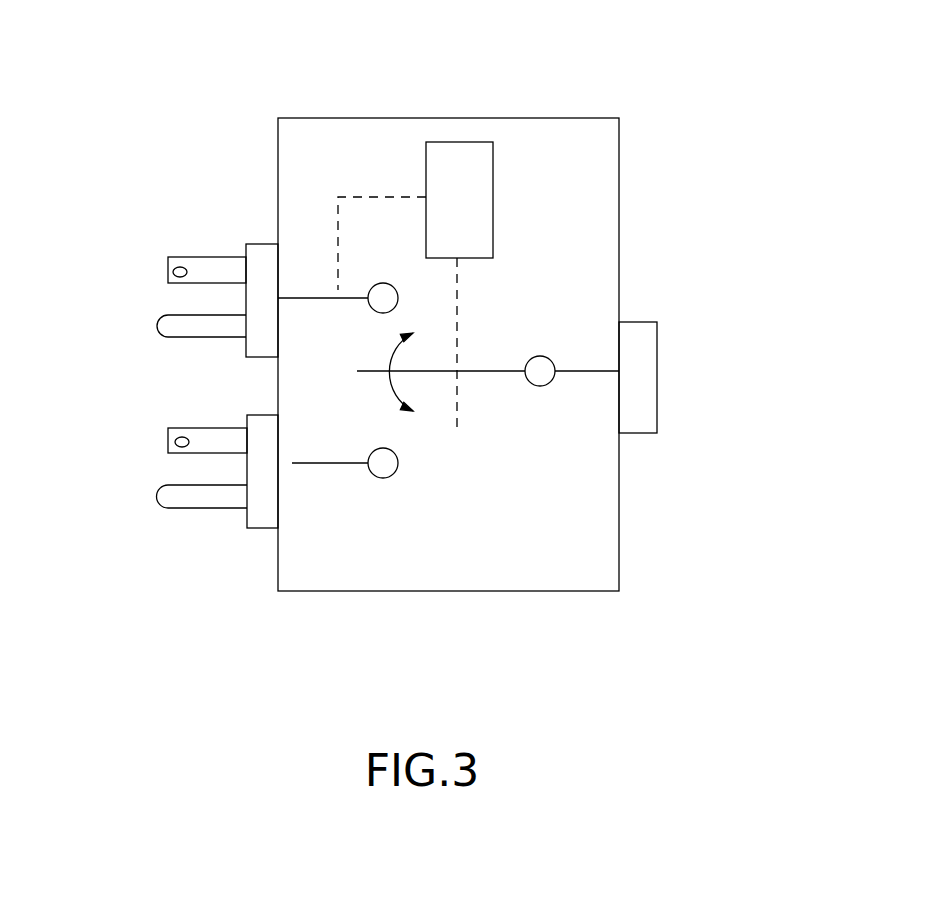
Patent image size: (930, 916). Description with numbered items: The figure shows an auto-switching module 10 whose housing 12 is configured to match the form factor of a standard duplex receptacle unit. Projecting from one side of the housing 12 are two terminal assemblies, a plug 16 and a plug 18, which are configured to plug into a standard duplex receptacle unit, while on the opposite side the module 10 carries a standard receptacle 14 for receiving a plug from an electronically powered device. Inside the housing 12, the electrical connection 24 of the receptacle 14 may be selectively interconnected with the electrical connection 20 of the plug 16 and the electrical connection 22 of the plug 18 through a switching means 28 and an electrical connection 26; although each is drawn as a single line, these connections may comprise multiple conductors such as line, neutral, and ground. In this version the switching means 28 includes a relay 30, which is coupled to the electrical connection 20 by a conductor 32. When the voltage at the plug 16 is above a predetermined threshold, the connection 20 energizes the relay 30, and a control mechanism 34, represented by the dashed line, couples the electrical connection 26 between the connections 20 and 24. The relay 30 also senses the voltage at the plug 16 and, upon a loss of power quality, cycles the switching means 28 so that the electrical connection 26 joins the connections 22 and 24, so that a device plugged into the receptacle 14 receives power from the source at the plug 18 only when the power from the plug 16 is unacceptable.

The auto-switching module 10 is at (715, 101).
The housing 12 is at (580, 118).
The receptacle 14 is at (657, 433).
The plug 16 is at (147, 240).
The plug 18 is at (150, 473).
The electrical connection 20 is at (313, 296).
The electrical connection 22 is at (333, 463).
The electrical connection 24 is at (582, 371).
The electrical connection 26 is at (493, 371).
The switching means 28 is at (387, 358).
The relay 30 is at (459, 200).
The conductor 32 is at (396, 197).
The control mechanism 34 is at (457, 445).